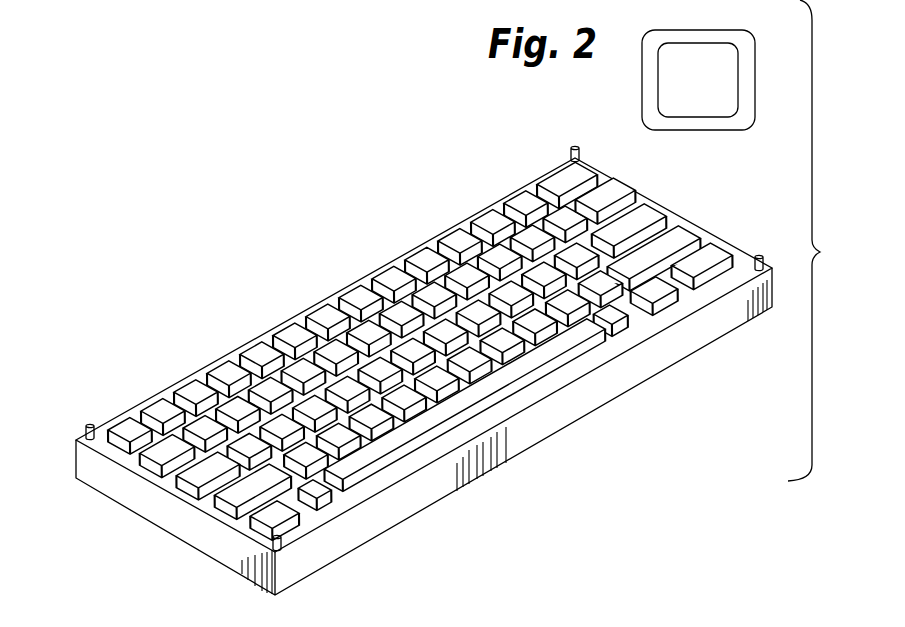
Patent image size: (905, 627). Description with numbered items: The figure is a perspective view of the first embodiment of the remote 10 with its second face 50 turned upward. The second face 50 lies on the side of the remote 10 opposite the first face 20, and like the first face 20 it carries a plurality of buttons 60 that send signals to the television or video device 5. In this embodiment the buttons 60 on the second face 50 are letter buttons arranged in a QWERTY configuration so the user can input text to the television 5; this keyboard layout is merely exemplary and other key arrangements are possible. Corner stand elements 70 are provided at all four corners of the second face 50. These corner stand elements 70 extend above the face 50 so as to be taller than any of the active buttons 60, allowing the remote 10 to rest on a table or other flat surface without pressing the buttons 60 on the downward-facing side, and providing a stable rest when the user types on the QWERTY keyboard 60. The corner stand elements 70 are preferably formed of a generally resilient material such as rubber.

The television or video device 5 is at (757, 80).
The remote 10 is at (724, 210).
The first face 20 is at (508, 481).
The second face 50 is at (636, 200).
The buttons 60 is at (222, 346).
The corner stand elements 70 is at (88, 423).